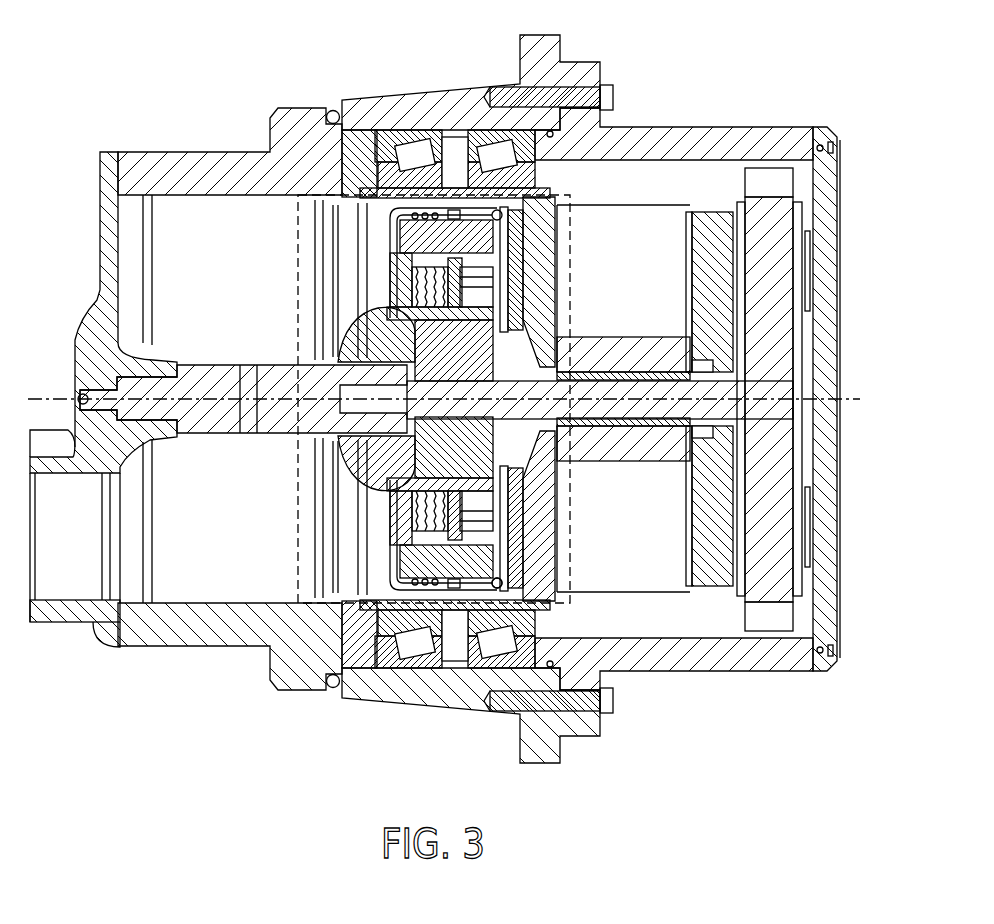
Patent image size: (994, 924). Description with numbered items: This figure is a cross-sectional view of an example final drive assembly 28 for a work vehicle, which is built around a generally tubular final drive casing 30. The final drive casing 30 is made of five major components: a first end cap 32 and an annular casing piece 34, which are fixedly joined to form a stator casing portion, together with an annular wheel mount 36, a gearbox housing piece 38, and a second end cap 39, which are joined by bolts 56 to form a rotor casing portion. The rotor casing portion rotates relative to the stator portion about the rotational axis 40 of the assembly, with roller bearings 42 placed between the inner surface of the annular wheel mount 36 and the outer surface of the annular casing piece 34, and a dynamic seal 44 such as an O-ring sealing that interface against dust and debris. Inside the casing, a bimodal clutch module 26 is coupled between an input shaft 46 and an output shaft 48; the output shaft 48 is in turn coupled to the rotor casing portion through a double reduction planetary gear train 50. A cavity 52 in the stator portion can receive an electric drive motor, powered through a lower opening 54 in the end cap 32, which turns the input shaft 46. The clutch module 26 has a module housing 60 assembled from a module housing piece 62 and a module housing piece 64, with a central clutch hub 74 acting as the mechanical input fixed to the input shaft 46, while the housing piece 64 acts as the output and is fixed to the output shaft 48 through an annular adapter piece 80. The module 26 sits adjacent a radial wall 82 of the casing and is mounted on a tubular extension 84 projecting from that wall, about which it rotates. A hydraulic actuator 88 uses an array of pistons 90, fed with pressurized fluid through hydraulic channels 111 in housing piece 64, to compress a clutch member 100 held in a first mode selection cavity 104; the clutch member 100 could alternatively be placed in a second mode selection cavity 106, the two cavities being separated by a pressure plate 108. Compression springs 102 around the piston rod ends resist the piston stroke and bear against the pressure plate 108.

The bimodal clutch module 26 is at (306, 506).
The final drive assembly 28 is at (444, 396).
The final drive casing 30 is at (724, 678).
The first end cap 32 is at (110, 183).
The annular casing piece 34 is at (167, 170).
The annular wheel mount 36 is at (403, 96).
The gearbox housing piece 38 is at (693, 140).
The second end cap 39 is at (820, 463).
The rotational axis 40 is at (50, 398).
The roller bearings 42 is at (487, 133).
The dynamic seal 44 is at (330, 112).
The input shaft 46 is at (207, 377).
The output shaft 48 is at (650, 390).
The double reduction planetary gear train 50 is at (806, 215).
The cavity 52 is at (189, 578).
The lower opening 54 is at (52, 578).
The bolts 56 is at (607, 100).
The module housing 60 is at (384, 231).
The module housing piece 62 is at (384, 565).
The module housing piece 64 is at (543, 283).
The clutch hub 74 is at (372, 330).
The annular adapter piece 80 is at (437, 373).
The radial wall 82 is at (533, 530).
The tubular extension 84 is at (485, 372).
The hydraulic actuator 88 is at (503, 575).
The pistons 90 is at (477, 251).
The clutch member 100 is at (415, 270).
The compression springs 102 is at (425, 212).
The first mode selection cavity 104 is at (393, 500).
The second mode selection cavity 106 is at (477, 510).
The pressure plate 108 is at (487, 270).
The hydraulic channels 111 is at (503, 463).